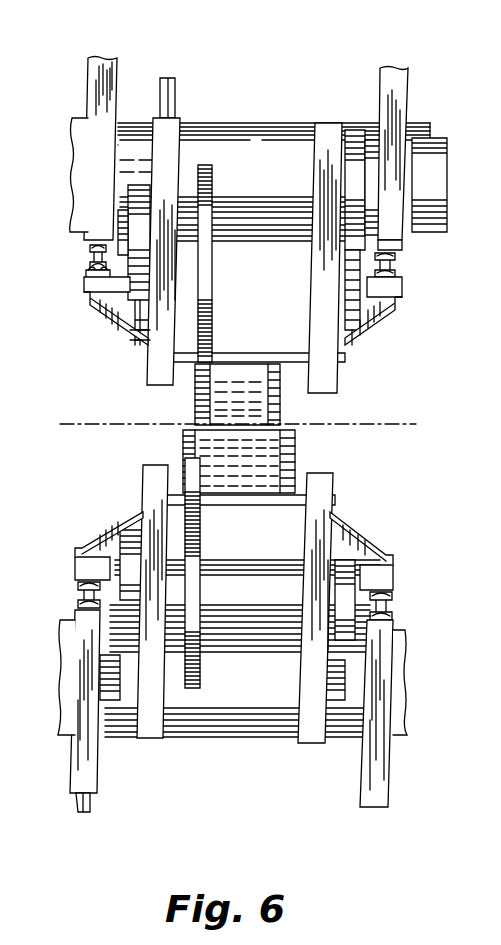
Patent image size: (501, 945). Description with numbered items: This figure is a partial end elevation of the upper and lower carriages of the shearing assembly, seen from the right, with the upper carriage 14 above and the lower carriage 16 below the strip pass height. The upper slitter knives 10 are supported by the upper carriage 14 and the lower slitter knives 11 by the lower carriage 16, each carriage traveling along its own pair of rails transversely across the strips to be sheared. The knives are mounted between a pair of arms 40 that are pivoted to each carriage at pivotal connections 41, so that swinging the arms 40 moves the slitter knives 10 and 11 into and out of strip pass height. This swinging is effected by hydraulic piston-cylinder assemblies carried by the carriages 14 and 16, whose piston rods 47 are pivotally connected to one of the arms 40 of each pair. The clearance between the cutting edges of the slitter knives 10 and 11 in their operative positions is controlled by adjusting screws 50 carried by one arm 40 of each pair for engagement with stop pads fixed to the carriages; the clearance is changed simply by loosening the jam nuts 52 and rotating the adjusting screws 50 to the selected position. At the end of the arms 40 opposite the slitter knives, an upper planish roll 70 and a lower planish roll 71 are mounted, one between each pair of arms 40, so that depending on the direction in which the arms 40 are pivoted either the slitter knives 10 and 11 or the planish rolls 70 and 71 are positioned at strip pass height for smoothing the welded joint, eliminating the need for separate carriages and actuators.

The upper slitter shear knives 10 is at (194, 400).
The lower slitter shear knives 11 is at (184, 450).
The upper carriage 14 is at (84, 60).
The lower carriage 16 is at (70, 750).
The arms 40 is at (172, 132).
The pivotal connections 41 is at (252, 135).
The piston rods 47 is at (176, 82).
The adjusting screws 50 is at (88, 250).
The jam nuts 52 is at (86, 272).
The upper planish roll 70 is at (214, 321).
The lower planish roll 71 is at (201, 556).